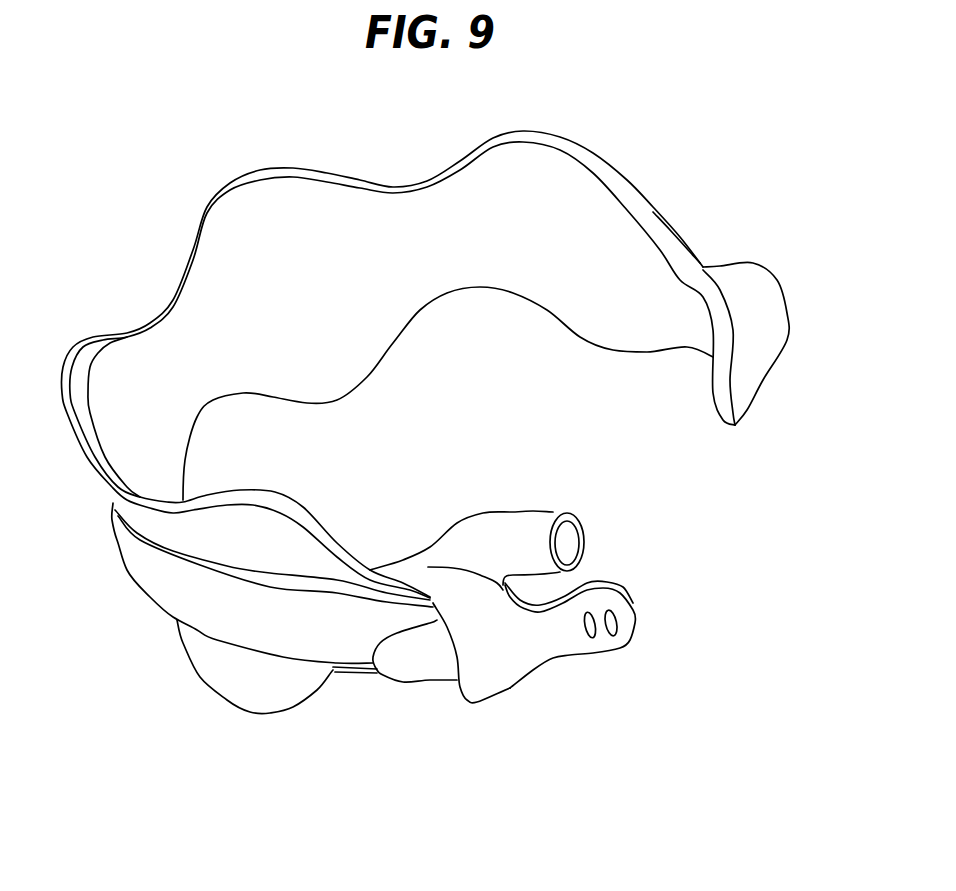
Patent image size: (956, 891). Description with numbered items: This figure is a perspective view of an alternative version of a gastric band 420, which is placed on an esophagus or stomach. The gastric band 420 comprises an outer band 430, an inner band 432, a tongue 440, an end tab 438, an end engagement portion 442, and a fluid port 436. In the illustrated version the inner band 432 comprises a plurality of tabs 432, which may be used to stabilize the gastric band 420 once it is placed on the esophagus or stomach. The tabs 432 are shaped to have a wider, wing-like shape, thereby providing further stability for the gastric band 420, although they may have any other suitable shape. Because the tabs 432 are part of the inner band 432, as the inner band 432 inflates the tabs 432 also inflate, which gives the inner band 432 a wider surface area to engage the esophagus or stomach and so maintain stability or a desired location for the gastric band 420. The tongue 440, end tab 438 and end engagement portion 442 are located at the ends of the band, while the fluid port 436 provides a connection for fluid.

The gastric band 420 is at (683, 563).
The outer band 430 is at (140, 572).
The inner band 432 is at (240, 692).
The fluid port 436 is at (520, 537).
The end tab 438 is at (578, 632).
The tongue 440 is at (397, 665).
The end engagement portion 442 is at (757, 362).